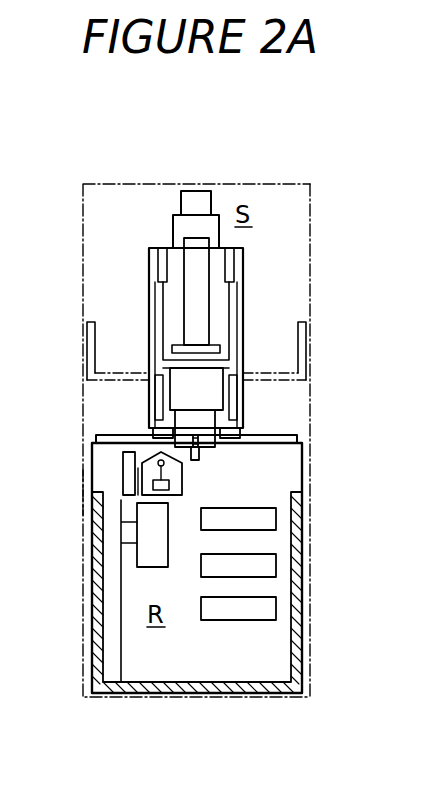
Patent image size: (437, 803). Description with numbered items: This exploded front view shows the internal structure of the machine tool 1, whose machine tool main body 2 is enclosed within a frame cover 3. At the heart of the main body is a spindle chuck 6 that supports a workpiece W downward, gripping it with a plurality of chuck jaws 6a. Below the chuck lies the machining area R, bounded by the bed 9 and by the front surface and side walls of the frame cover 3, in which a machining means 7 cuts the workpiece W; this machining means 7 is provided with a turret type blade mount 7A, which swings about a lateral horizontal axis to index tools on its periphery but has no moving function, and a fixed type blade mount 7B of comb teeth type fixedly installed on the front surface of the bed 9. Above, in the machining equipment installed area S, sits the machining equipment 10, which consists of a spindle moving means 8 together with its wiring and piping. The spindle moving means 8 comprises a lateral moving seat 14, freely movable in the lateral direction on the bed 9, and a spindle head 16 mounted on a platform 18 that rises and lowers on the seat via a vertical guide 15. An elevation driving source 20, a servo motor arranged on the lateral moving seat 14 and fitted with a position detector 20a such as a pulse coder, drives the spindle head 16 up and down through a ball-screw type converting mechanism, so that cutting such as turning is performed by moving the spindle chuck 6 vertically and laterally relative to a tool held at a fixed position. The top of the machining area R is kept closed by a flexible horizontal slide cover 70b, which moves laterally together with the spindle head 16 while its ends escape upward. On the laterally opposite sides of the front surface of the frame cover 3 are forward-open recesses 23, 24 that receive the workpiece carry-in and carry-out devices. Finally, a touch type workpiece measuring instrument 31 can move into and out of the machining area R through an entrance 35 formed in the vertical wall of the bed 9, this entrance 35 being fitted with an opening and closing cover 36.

The substrate processing apparatus 1 is at (252, 180).
The machine tool main body 2 is at (310, 657).
The frame cover 3 is at (310, 158).
The spindle chuck 6 is at (177, 410).
The chuck jaws 6a is at (83, 492).
The machining means 7 is at (218, 654).
The turret type blade mount 7A is at (172, 662).
The fixed type blade mount 7B is at (218, 610).
The spindle moving means 8 is at (245, 327).
The bed 9 is at (275, 497).
The machining equipment 10 is at (142, 218).
The lateral moving seat 14 is at (247, 270).
The guide 15 is at (245, 260).
The spindle head 16 is at (180, 385).
The platform 18 is at (160, 300).
The elevation driving source 20 is at (173, 215).
The position detector 20a is at (197, 191).
The recess 23 is at (277, 470).
The recess 24 is at (107, 462).
The workpiece measuring instrument 31 is at (138, 495).
The entrance 35 is at (168, 508).
The opening and closing cover 36 is at (125, 453).
The slide cover 70b is at (280, 380).
The workpiece W is at (199, 455).